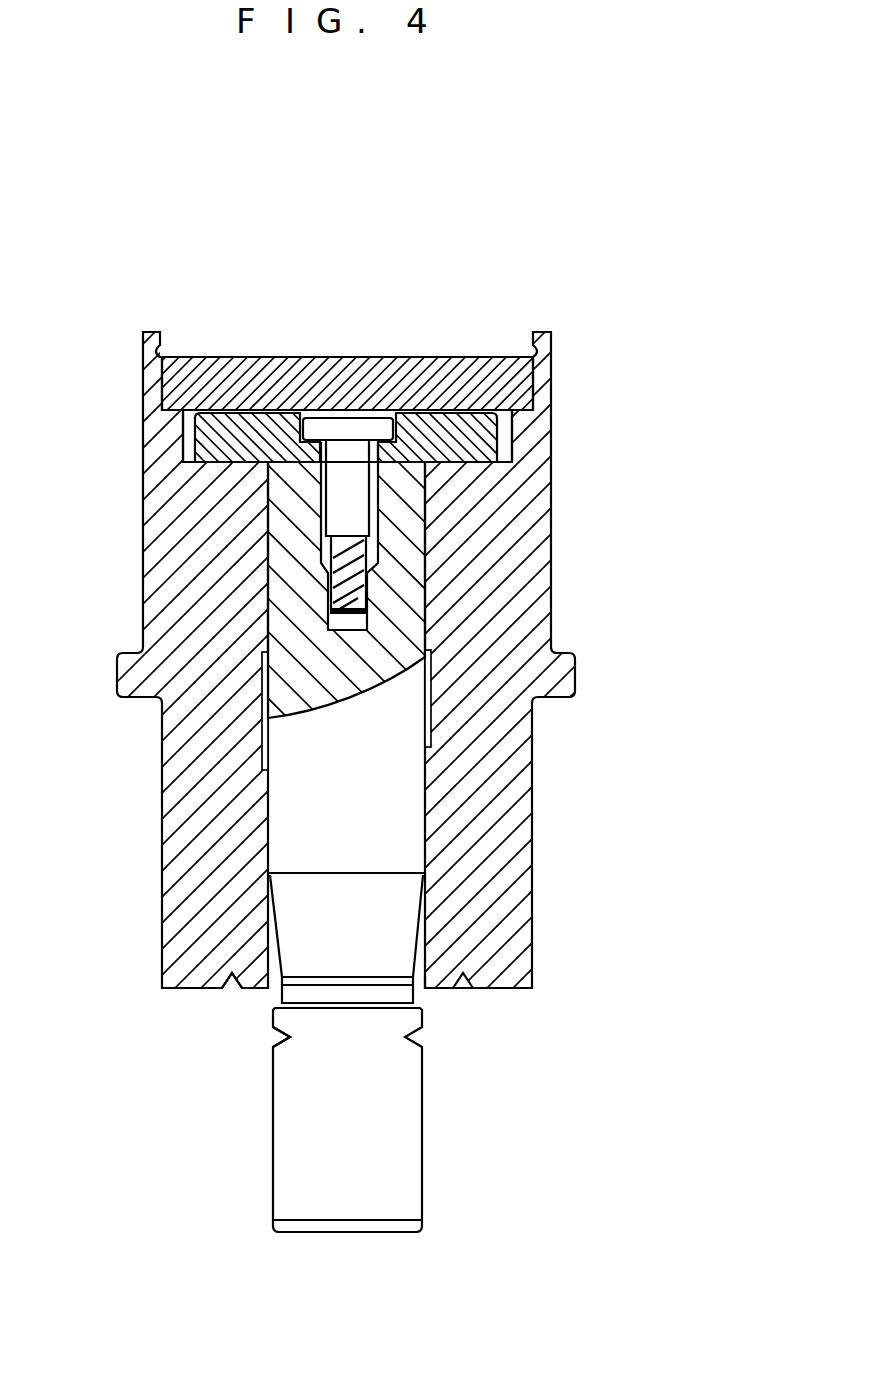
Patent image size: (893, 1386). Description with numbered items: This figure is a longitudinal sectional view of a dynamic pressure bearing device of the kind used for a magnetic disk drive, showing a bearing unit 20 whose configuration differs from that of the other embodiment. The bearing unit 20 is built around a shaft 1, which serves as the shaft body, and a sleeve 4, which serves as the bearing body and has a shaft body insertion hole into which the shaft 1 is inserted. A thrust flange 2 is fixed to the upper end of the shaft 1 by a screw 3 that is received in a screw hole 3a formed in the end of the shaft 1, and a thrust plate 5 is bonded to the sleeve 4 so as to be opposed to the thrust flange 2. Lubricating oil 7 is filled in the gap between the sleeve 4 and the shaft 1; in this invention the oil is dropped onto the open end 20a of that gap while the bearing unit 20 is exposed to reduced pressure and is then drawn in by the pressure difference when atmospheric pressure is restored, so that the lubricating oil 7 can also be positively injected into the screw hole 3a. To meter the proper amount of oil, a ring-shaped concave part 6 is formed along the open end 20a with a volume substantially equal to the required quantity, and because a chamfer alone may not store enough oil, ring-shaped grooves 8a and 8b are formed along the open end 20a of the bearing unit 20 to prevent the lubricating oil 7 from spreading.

The shaft 1 is at (297, 1140).
The thrust flange 2 is at (231, 428).
The screw 3 is at (358, 428).
The screw hole 3a is at (355, 622).
The sleeve 4 is at (500, 960).
The thrust plate 5 is at (470, 367).
The ring-shaped concave part 6 is at (279, 975).
The lubricating oil 7 is at (512, 447).
The ring-shaped groove 8a is at (227, 988).
The ring-shaped groove 8b is at (287, 1038).
The bearing unit 20 is at (580, 556).
The open end 20a is at (428, 1002).